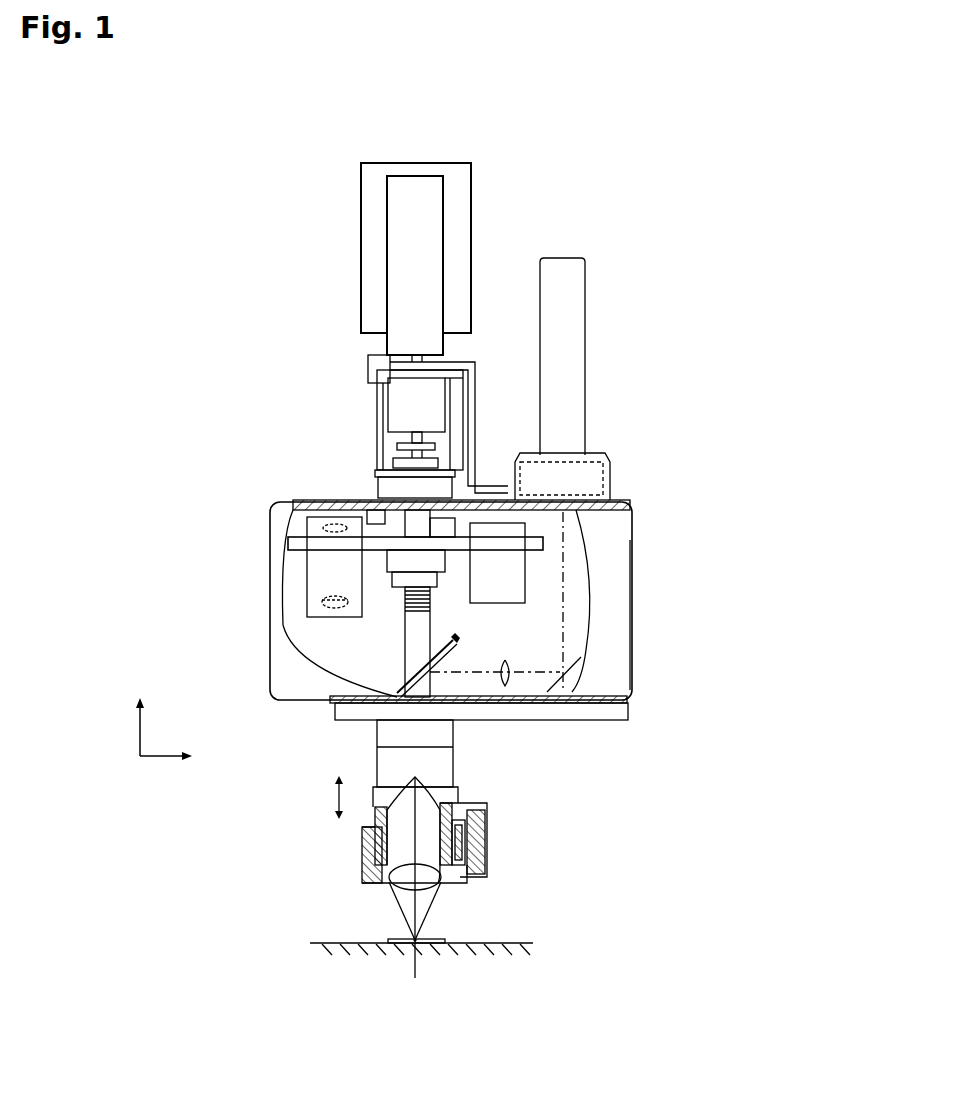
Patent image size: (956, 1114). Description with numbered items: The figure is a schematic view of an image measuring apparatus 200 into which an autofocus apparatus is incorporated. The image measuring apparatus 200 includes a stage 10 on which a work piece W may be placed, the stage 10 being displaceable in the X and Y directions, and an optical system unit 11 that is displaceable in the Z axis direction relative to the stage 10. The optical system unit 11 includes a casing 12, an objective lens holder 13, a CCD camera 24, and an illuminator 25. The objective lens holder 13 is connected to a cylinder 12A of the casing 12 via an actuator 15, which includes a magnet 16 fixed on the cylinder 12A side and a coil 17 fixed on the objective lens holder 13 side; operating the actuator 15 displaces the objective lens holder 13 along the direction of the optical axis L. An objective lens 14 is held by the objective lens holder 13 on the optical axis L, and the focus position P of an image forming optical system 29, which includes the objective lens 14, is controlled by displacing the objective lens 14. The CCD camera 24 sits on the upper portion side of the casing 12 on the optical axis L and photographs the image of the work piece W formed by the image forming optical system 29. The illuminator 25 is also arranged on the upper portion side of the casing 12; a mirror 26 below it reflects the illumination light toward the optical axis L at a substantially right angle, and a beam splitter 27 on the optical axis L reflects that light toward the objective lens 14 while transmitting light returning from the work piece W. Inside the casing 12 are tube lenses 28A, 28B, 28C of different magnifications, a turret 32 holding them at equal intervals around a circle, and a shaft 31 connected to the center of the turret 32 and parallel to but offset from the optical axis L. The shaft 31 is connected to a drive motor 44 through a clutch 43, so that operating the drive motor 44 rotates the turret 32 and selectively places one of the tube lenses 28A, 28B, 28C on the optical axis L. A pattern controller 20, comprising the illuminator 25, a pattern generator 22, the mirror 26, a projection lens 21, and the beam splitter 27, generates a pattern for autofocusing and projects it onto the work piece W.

The image measuring apparatus 200 is at (419, 146).
The optical system unit 11 is at (216, 262).
The CCD camera 24 is at (368, 228).
The drive motor 44 is at (395, 303).
The clutch 43 is at (395, 405).
The illuminator 25 is at (575, 322).
The pattern generator 22 is at (590, 455).
The pattern controller 20 is at (676, 430).
The casing 12 is at (273, 685).
The mirror 26 is at (595, 668).
The tube lens 28A is at (508, 597).
The tube lens 28B is at (340, 613).
The tube lens 28C is at (373, 525).
The turret 32 is at (290, 548).
The shaft 31 is at (410, 628).
The beam splitter 27 is at (447, 640).
The projection lens 21 is at (512, 683).
The image forming optical system 29 is at (468, 734).
The cylinder 12A is at (383, 752).
The objective lens holder 13 is at (362, 845).
The actuator 15 is at (540, 826).
The magnet 16 is at (487, 837).
The coil 17 is at (487, 862).
The objective lens 14 is at (428, 885).
The optical axis L is at (417, 908).
The work piece W is at (395, 940).
The focus position P is at (418, 939).
The stage 10 is at (330, 943).